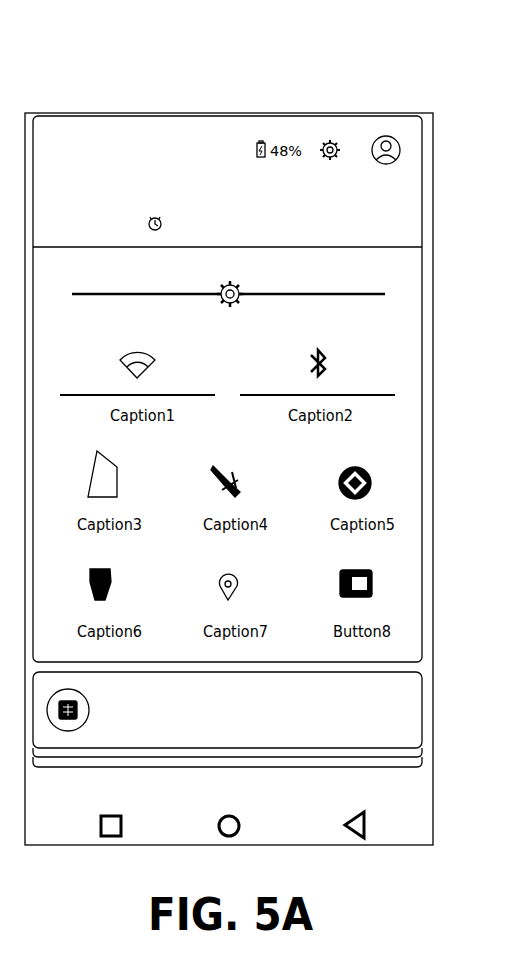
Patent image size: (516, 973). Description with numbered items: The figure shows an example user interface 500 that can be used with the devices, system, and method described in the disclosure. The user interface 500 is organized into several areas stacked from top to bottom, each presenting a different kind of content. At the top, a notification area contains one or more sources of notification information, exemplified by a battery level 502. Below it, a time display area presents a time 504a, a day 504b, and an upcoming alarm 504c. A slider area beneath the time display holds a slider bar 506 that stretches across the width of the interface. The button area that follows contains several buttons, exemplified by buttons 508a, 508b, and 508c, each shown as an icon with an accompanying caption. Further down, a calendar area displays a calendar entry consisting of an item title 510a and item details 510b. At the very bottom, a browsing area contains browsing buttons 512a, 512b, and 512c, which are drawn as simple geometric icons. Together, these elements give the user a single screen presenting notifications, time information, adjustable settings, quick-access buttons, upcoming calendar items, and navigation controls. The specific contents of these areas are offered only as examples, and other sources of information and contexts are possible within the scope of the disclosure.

The user interface 500 is at (391, 73).
The battery level 502 is at (257, 131).
The time 504a is at (118, 161).
The day 504b is at (77, 235).
The upcoming alarm 504c is at (213, 227).
The slider bar 506 is at (322, 293).
The button 508a is at (143, 356).
The button 508b is at (107, 462).
The button 508c is at (224, 472).
The item title 510a is at (399, 696).
The item details 510b is at (308, 721).
The browsing button 512a is at (100, 818).
The browsing button 512b is at (222, 818).
The browsing button 512c is at (356, 815).